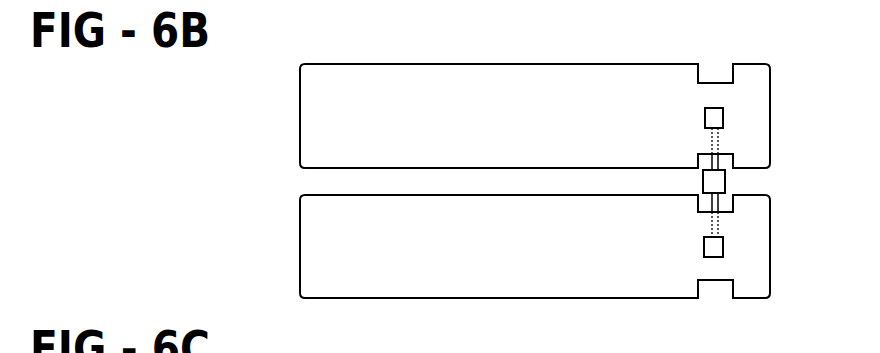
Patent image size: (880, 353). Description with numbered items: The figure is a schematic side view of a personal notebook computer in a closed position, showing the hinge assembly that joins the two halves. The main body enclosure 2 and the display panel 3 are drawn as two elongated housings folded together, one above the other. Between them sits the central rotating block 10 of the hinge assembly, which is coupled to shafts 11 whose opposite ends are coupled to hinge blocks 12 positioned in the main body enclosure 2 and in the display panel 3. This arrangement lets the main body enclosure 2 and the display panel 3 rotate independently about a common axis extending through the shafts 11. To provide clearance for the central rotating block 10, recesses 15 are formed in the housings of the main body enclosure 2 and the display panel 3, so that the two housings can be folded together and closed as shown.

The main body enclosure 2 is at (300, 246).
The display panel 3 is at (300, 122).
The central rotating block 10 is at (713, 180).
The shafts 11 is at (733, 159).
The hinge blocks 12 is at (704, 118).
The recesses 15 is at (716, 69).